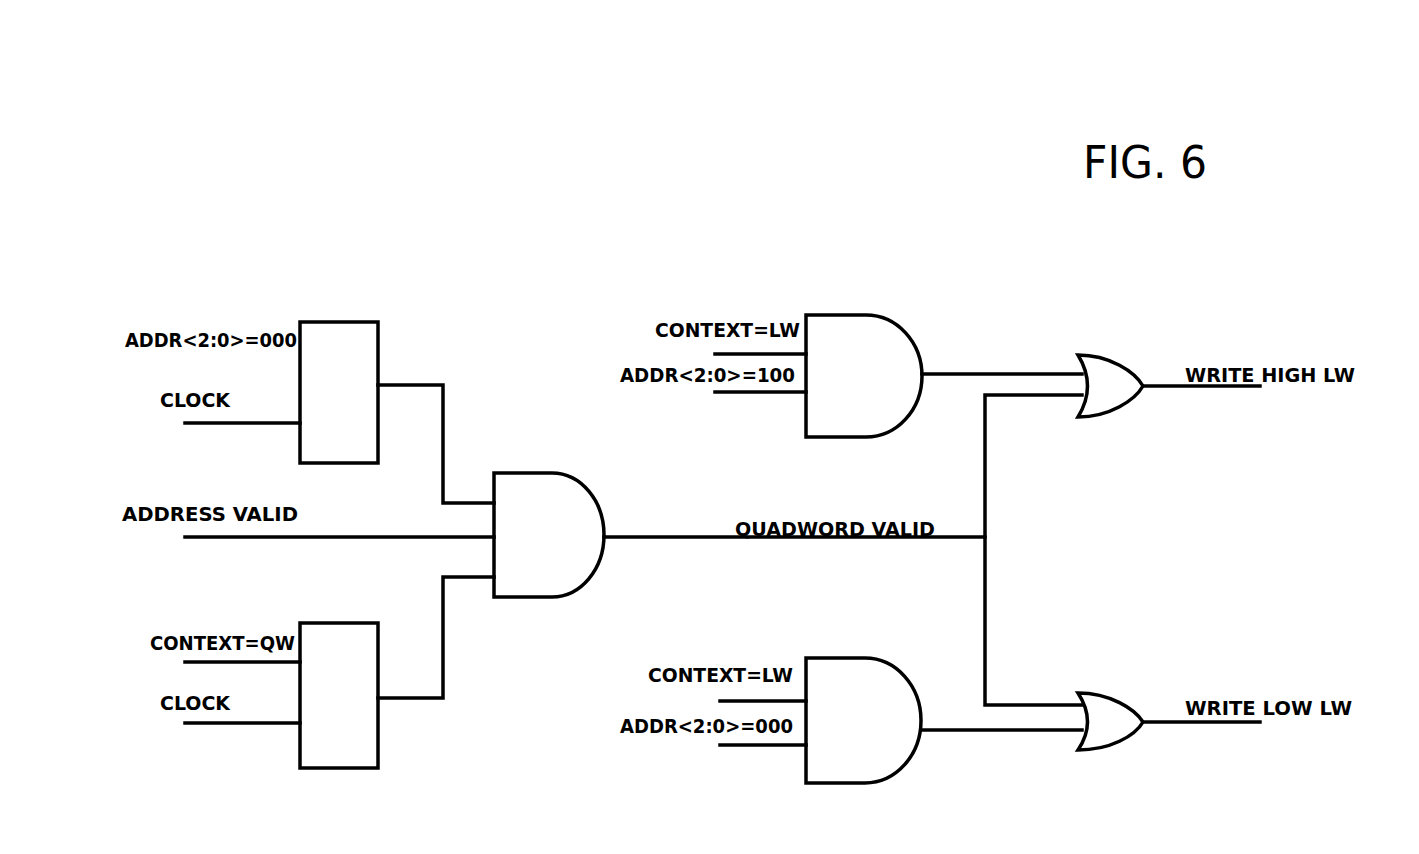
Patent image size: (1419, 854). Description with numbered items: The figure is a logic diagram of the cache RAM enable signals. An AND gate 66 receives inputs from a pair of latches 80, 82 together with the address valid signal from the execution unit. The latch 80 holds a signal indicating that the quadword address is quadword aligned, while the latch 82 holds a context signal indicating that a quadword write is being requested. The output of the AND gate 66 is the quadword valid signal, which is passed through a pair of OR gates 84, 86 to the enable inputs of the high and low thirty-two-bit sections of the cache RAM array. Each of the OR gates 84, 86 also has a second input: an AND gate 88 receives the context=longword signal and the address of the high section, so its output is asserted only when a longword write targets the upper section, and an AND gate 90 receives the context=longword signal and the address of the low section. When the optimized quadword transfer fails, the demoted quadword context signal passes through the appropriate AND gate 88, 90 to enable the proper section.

The latch 80 is at (378, 340).
The latch 82 is at (378, 678).
The AND gate 66 is at (588, 495).
The AND gate 88 is at (890, 323).
The AND gate 90 is at (888, 665).
The OR gate 84 is at (1132, 370).
The OR gate 86 is at (1123, 700).